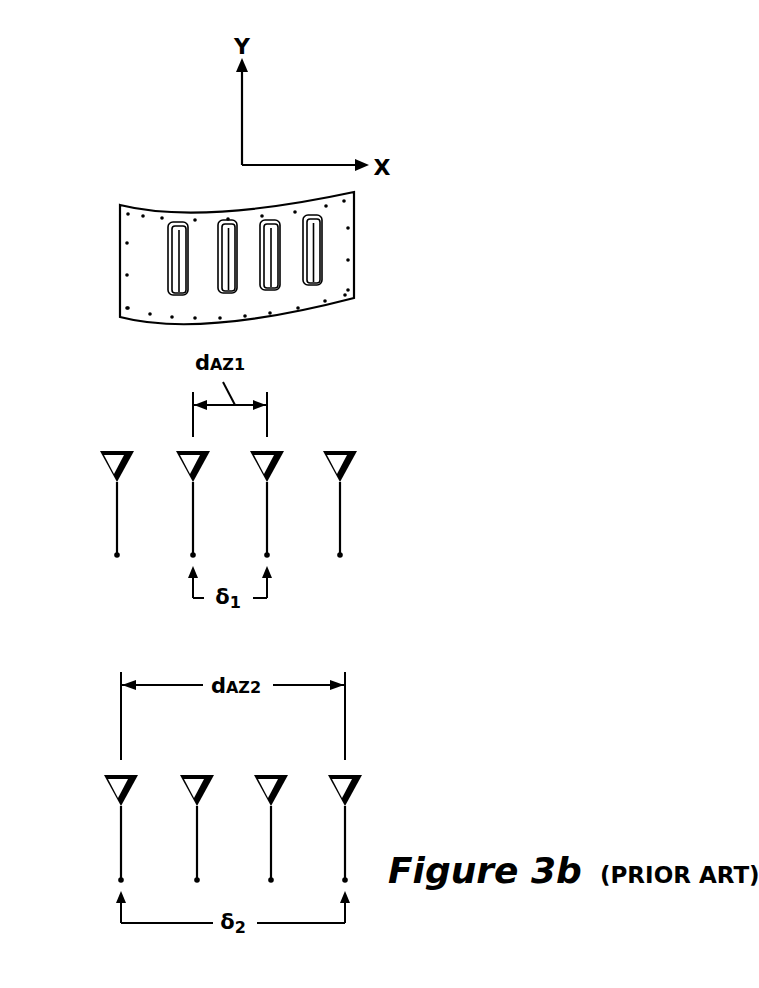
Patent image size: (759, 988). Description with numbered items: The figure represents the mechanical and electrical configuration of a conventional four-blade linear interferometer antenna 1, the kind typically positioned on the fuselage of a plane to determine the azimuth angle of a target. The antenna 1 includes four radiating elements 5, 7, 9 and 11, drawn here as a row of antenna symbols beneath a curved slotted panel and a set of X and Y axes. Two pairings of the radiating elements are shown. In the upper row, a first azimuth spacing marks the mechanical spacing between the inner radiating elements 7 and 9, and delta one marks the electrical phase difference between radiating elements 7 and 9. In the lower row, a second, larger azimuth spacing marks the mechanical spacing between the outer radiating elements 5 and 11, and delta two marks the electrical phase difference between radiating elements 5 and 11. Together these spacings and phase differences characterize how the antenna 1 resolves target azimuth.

The linear interferometer antenna 1 is at (112, 258).
The radiating element 5 is at (118, 451).
The radiating element 7 is at (190, 451).
The radiating element 9 is at (268, 451).
The radiating element 11 is at (338, 451).